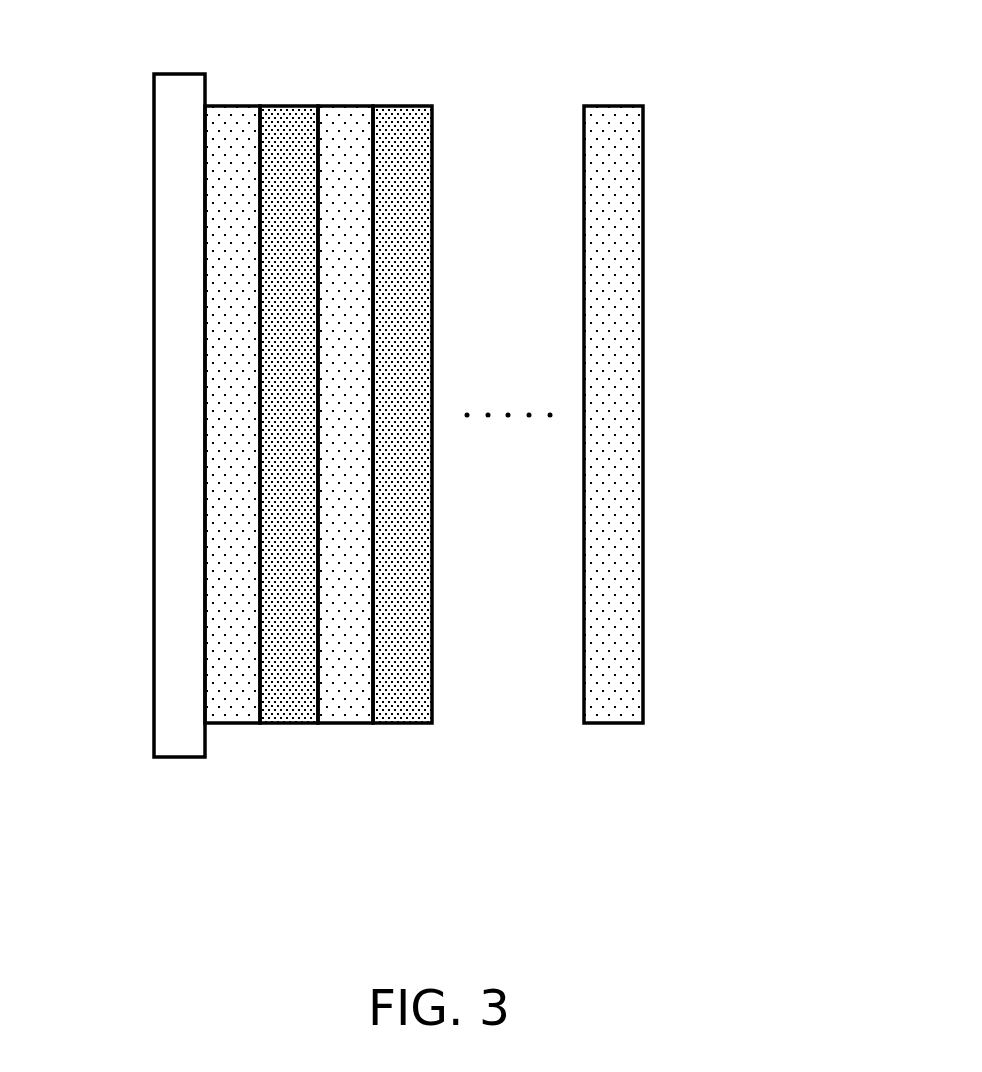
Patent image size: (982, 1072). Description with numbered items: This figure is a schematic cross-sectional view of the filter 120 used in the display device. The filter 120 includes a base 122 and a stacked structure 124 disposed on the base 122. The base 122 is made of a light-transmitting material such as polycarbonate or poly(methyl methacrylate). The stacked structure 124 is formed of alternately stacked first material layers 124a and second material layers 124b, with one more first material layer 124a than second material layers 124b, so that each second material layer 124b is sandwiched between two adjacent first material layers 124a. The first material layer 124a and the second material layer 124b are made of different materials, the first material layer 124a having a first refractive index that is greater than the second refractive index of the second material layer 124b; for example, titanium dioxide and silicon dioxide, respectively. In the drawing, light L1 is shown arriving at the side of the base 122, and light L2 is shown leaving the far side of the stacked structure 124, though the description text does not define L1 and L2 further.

The filter 120 is at (486, 483).
The base 122 is at (177, 733).
The stacked structure 124 is at (424, 448).
The first material layer 124a is at (232, 702).
The second material layer 124b is at (288, 707).
The incident light L1 is at (150, 415).
The emitted light L2 is at (645, 415).